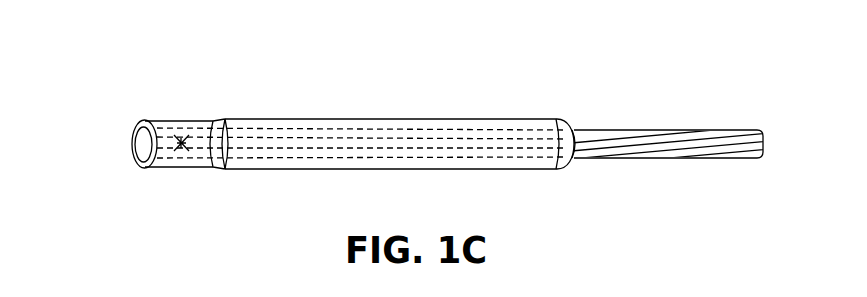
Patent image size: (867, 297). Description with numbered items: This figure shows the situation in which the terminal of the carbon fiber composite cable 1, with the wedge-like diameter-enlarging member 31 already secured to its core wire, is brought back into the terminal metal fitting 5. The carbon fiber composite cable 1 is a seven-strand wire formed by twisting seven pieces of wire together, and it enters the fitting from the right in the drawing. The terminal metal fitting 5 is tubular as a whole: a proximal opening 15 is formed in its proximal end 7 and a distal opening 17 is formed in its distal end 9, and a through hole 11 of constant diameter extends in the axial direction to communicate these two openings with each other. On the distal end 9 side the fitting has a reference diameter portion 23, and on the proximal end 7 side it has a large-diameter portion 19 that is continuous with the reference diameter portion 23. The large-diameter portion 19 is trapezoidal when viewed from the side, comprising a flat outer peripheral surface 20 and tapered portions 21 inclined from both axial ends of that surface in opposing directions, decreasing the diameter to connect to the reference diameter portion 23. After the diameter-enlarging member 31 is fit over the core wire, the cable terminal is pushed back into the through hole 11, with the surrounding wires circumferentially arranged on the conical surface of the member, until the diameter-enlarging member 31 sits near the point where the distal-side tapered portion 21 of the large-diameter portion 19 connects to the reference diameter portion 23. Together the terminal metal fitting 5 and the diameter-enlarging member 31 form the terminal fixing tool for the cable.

The carbon fiber composite cable 1 is at (687, 140).
The terminal metal fitting 5 is at (393, 110).
The proximal end 7 is at (569, 127).
The distal end 9 is at (147, 121).
The through hole 11 is at (133, 143).
The proximal opening 15 is at (588, 131).
The distal opening 17 is at (140, 168).
The large-diameter portion 19 is at (453, 127).
The flat outer peripheral surface 20 is at (293, 119).
The tapered portions 21 is at (228, 155).
The reference diameter portion 23 is at (184, 120).
The diameter-enlarging member 31 is at (174, 157).